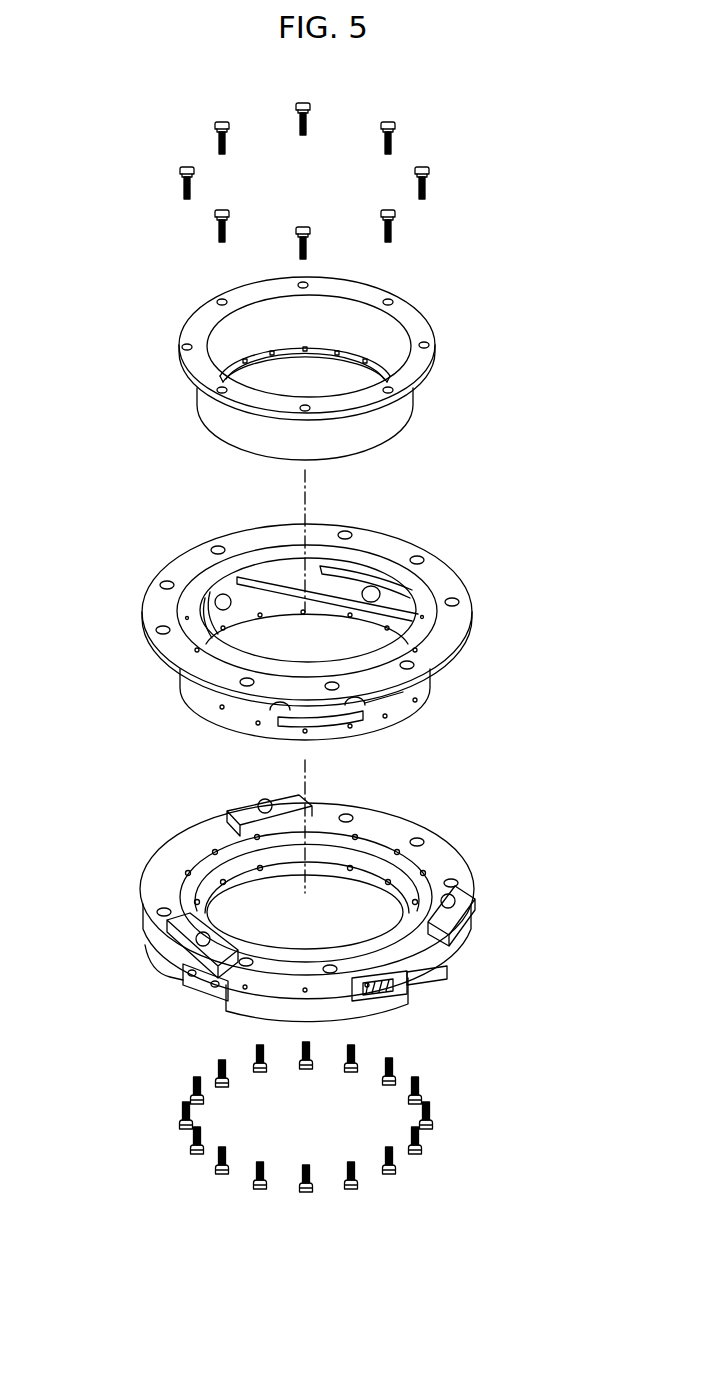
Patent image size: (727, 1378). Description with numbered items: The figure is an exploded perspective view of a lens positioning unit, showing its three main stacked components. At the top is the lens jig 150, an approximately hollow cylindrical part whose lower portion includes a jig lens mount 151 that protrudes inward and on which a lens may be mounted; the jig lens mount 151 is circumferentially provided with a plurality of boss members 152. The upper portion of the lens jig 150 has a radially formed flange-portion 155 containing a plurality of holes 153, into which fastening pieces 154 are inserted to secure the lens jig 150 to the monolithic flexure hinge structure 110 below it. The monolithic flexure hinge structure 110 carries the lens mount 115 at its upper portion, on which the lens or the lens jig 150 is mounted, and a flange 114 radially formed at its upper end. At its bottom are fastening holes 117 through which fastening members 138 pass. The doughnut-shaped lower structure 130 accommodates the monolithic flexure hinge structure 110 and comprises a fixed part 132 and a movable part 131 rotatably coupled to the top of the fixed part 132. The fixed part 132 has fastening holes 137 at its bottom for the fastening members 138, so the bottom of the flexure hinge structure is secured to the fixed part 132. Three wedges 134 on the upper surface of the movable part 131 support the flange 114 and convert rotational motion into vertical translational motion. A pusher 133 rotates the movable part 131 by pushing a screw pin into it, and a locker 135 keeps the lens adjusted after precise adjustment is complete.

The monolithic flexure hinge structure 110 is at (345, 613).
The flange 114 is at (437, 553).
The lens mount 115 is at (202, 588).
The fastening holes 117 is at (195, 700).
The lower structure 130 is at (334, 917).
The movable part 131 is at (440, 857).
The fixed part 132 is at (443, 983).
The pusher 133 is at (415, 1000).
The wedges 134 is at (150, 942).
The locker 135 is at (188, 982).
The fastening holes 137 is at (222, 880).
The fastening members 138 is at (395, 1170).
The lens jig 150 is at (348, 341).
The jig lens mount 151 is at (330, 352).
The boss members 152 is at (243, 360).
The holes 153 is at (427, 345).
The fastening pieces 154 is at (430, 174).
The flange-portion 155 is at (423, 372).